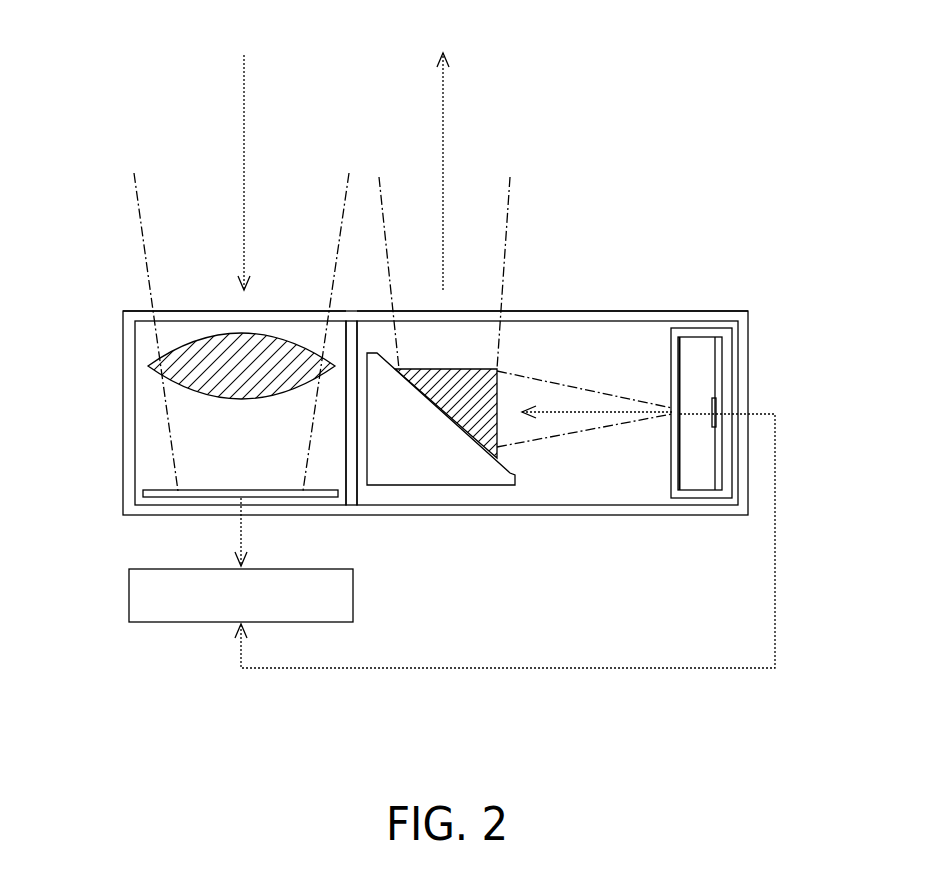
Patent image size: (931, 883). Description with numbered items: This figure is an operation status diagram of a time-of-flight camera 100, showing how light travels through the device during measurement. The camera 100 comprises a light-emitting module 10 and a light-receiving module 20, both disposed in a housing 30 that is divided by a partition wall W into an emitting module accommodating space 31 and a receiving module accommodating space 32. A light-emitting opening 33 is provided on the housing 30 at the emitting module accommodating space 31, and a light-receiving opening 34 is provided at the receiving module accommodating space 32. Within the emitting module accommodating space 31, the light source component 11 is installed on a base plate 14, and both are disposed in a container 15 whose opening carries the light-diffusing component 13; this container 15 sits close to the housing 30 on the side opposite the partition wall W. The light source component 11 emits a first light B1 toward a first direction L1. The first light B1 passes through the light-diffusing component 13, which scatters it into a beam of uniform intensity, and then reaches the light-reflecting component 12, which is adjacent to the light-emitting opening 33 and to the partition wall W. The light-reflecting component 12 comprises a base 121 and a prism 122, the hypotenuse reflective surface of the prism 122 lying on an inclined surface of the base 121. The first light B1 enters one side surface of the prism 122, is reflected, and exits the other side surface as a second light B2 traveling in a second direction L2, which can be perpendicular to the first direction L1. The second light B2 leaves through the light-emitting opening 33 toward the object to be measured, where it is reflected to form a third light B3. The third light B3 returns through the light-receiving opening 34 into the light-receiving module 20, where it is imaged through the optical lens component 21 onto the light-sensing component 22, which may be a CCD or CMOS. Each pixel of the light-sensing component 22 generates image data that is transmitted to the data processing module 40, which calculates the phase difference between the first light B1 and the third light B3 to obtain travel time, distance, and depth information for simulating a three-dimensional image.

The time-of-flight camera 100 is at (681, 159).
The light-emitting module 10 is at (568, 405).
The light source component 11 is at (715, 398).
The light-reflecting component 12 is at (452, 467).
The base 121 is at (441, 457).
The prism 122 is at (520, 461).
The light-diffusing component 13 is at (672, 448).
The base plate 14 is at (720, 368).
The container 15 is at (732, 445).
The light-receiving module 20 is at (218, 441).
The optical lens component 21 is at (190, 365).
The light-sensing component 22 is at (240, 491).
The housing 30 is at (750, 332).
The emitting module accommodating space 31 is at (640, 332).
The receiving module accommodating space 32 is at (147, 338).
The light-emitting opening 33 is at (540, 310).
The light-receiving opening 34 is at (140, 312).
The data processing module 40 is at (129, 598).
The partition wall W is at (358, 493).
The first light B1 is at (530, 387).
The second light B2 is at (508, 213).
The third light B3 is at (138, 202).
The first direction L1 is at (600, 385).
The second direction L2 is at (443, 172).